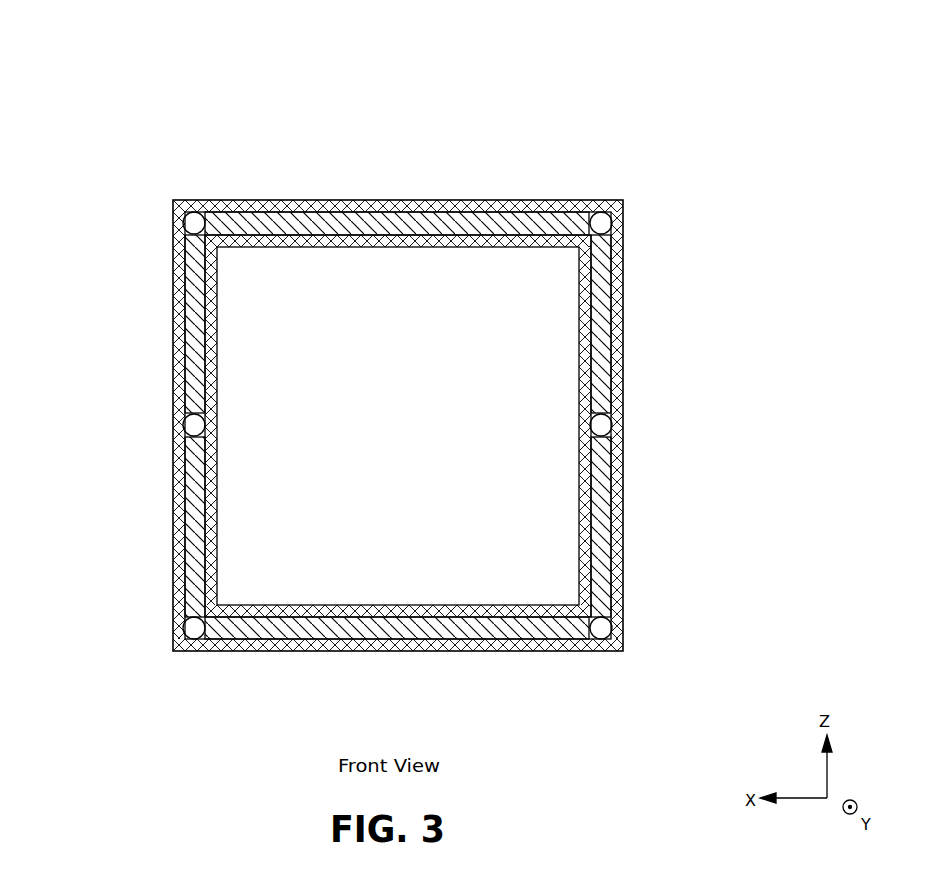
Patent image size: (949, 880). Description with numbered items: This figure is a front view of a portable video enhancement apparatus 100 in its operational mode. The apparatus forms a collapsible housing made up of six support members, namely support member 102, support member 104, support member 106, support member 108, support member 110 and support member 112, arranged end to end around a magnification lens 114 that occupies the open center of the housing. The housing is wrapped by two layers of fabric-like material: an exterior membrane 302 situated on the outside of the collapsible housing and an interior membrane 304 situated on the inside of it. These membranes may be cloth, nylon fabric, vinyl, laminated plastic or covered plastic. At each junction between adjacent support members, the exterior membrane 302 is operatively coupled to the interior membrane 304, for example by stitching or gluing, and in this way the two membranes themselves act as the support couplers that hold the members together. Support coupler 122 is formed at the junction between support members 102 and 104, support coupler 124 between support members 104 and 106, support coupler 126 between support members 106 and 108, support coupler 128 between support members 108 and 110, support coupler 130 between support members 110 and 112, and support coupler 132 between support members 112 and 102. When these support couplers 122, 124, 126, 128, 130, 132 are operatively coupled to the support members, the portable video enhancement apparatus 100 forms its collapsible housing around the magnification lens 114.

The portable video enhancement apparatus 100 is at (486, 374).
The support member 102 is at (365, 222).
The support member 104 is at (613, 327).
The support member 106 is at (612, 520).
The support member 108 is at (465, 630).
The support member 110 is at (190, 524).
The support member 112 is at (190, 322).
The magnification lens 114 is at (380, 425).
The support coupler 122 is at (604, 228).
The support coupler 124 is at (604, 430).
The support coupler 126 is at (608, 627).
The support coupler 128 is at (189, 629).
The support coupler 130 is at (189, 427).
The support coupler 132 is at (189, 224).
The exterior membrane 302 is at (233, 207).
The interior membrane 304 is at (492, 242).